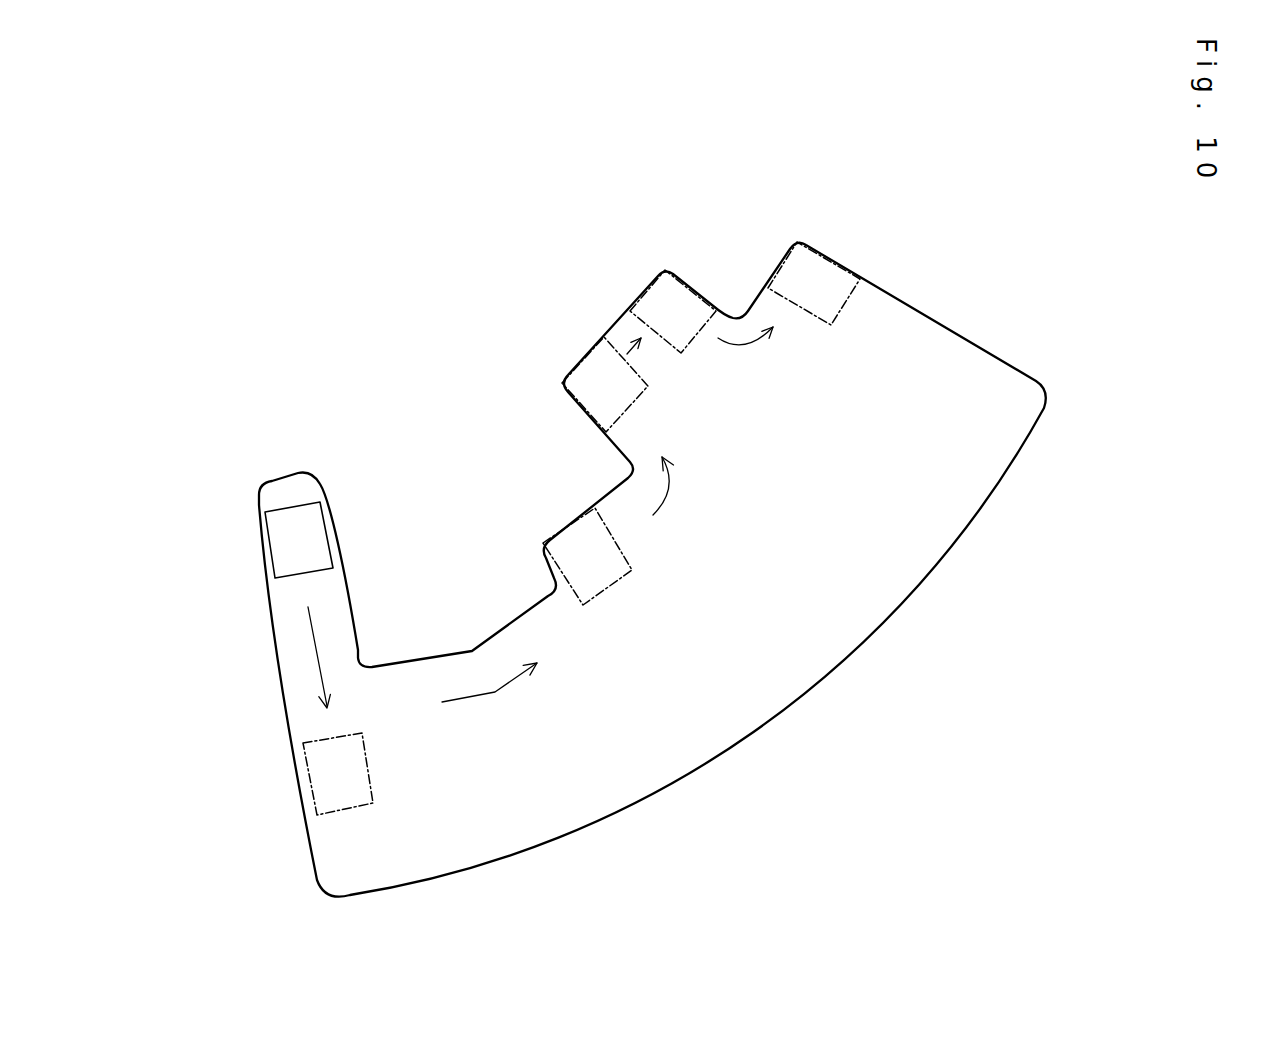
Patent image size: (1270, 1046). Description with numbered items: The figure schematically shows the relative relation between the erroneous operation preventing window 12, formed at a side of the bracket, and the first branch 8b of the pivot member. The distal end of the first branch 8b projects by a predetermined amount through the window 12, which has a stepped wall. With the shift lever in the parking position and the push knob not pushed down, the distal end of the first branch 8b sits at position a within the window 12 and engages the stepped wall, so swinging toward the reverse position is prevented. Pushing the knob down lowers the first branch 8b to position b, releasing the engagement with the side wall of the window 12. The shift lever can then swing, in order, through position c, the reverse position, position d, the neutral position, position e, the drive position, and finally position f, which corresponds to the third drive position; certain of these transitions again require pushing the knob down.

The first branch 8b is at (531, 528).
The erroneous operation preventing window 12 is at (950, 540).
The position a is at (299, 540).
The position b is at (338, 774).
The position c is at (587, 556).
The position d is at (605, 384).
The position e is at (673, 311).
The position f is at (814, 283).